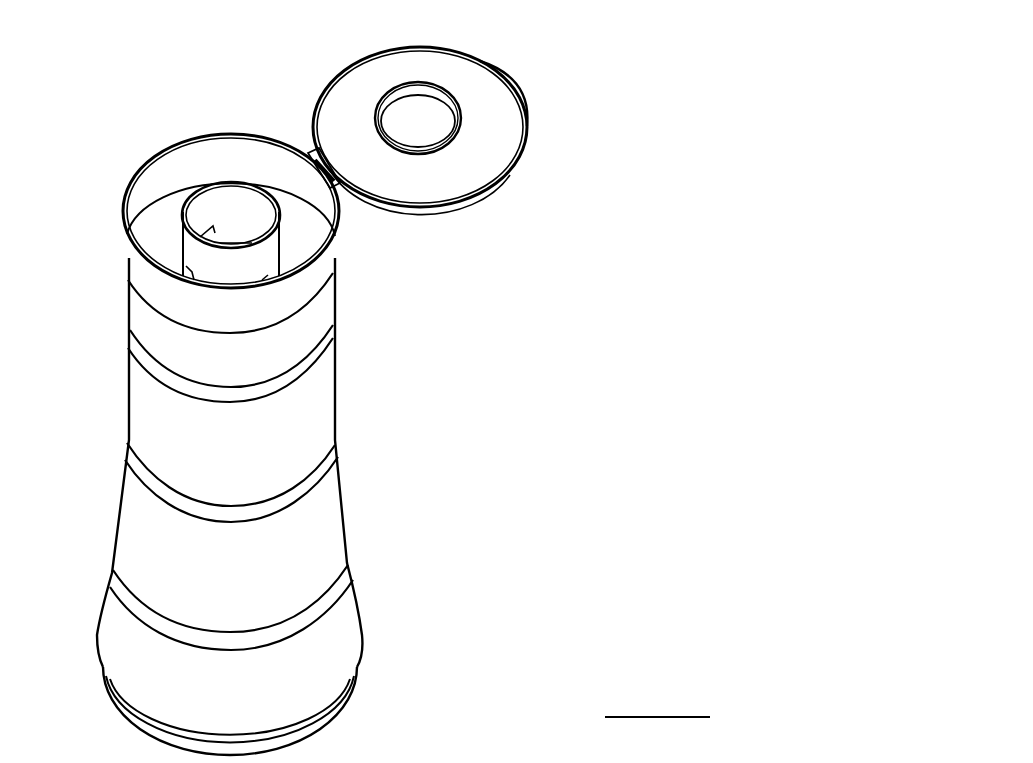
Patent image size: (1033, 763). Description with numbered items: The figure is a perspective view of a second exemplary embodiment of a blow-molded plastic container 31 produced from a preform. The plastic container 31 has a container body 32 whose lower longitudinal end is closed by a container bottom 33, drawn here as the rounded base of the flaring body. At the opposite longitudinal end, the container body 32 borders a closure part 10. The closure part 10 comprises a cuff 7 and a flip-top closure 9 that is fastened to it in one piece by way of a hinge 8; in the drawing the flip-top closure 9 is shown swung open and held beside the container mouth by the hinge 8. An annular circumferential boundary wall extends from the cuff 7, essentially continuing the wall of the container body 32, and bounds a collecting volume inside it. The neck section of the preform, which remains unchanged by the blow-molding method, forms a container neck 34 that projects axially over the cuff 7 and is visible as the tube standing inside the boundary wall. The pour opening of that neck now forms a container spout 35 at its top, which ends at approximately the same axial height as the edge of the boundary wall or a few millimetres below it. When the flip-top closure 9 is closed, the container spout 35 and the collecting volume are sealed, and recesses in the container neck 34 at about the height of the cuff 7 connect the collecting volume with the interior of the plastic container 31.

The closure part 10 is at (284, 104).
The cuff 7 is at (128, 262).
The hinge 8 is at (340, 188).
The flip-top closure 9 is at (527, 128).
The plastic container 31 is at (533, 328).
The container body 32 is at (340, 523).
The container bottom 33 is at (299, 742).
The container neck 34 is at (193, 257).
The container spout 35 is at (218, 214).